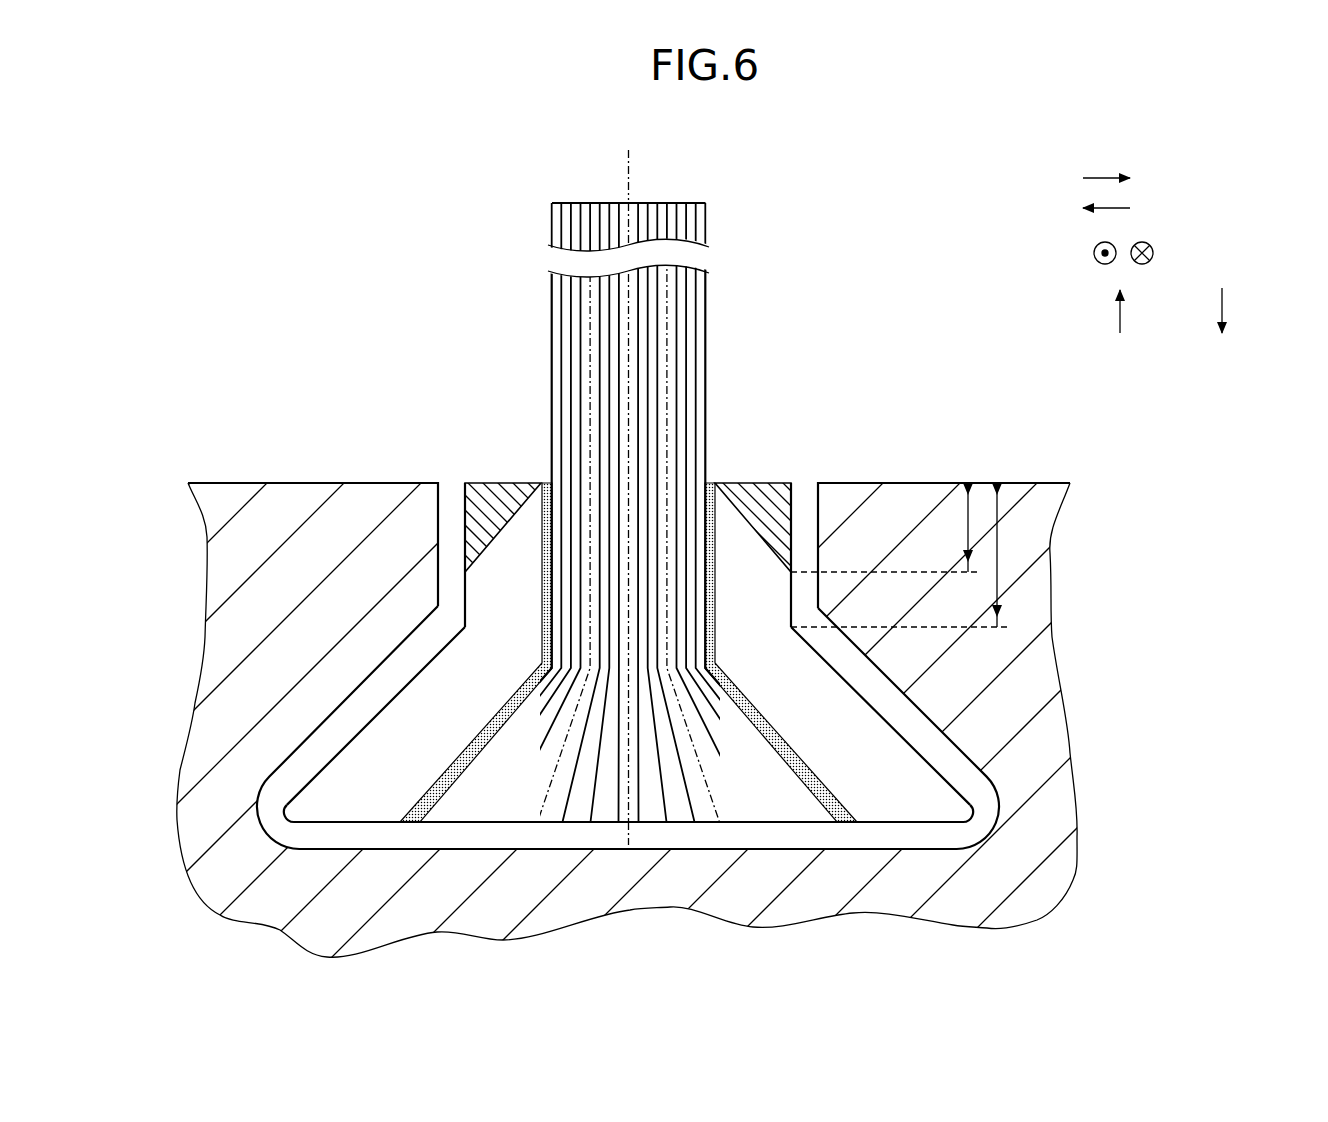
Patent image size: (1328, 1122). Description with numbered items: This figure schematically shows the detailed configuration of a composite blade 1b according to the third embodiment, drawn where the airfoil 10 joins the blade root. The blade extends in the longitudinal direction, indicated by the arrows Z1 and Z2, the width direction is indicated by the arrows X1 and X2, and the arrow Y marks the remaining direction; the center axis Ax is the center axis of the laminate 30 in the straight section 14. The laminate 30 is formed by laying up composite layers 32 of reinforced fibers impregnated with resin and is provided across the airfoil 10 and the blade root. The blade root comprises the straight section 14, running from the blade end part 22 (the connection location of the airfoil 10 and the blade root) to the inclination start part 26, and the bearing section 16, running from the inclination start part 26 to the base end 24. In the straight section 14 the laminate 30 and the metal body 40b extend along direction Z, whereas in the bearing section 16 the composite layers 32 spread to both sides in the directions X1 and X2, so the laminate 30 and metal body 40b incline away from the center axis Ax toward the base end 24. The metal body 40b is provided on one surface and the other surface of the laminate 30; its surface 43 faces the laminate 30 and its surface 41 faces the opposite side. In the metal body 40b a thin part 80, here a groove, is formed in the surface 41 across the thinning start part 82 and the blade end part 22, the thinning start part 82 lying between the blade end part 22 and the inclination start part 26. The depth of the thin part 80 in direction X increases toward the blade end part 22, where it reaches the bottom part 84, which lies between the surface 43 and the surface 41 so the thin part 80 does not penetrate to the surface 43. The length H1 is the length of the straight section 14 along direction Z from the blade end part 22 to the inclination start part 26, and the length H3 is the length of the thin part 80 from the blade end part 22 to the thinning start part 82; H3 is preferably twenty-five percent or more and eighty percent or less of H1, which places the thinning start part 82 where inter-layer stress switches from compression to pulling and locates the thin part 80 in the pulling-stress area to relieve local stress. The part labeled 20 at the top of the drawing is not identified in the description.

The composite blade 1b is at (856, 236).
The airfoil 10 is at (823, 302).
The straight section 14 is at (812, 556).
The bearing section 16 is at (958, 772).
The electric wire bundle 20 is at (713, 205).
The blade end part 22 is at (462, 466).
The base end 24 is at (833, 829).
The inclination start part 26 is at (454, 622).
The laminate 30 is at (550, 282).
The composite layers 32 is at (550, 315).
The metal body 40b is at (397, 755).
The surface 41 is at (465, 605).
The surface 43 is at (546, 636).
The thin part 80 is at (495, 494).
The thinning start part 82 is at (454, 568).
The bottom part 84 is at (522, 481).
The length H1 is at (999, 565).
The length H3 is at (969, 525).
The center axis Ax is at (628, 845).
The direction X1 is at (1139, 178).
The direction X2 is at (1139, 208).
The Y direction Y is at (1134, 253).
The Z1 direction Z1 is at (1154, 311).
The direction Z2 is at (1256, 310).